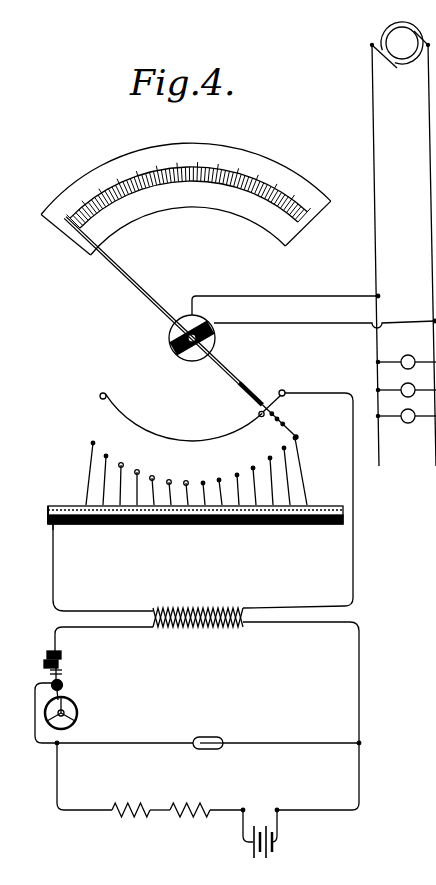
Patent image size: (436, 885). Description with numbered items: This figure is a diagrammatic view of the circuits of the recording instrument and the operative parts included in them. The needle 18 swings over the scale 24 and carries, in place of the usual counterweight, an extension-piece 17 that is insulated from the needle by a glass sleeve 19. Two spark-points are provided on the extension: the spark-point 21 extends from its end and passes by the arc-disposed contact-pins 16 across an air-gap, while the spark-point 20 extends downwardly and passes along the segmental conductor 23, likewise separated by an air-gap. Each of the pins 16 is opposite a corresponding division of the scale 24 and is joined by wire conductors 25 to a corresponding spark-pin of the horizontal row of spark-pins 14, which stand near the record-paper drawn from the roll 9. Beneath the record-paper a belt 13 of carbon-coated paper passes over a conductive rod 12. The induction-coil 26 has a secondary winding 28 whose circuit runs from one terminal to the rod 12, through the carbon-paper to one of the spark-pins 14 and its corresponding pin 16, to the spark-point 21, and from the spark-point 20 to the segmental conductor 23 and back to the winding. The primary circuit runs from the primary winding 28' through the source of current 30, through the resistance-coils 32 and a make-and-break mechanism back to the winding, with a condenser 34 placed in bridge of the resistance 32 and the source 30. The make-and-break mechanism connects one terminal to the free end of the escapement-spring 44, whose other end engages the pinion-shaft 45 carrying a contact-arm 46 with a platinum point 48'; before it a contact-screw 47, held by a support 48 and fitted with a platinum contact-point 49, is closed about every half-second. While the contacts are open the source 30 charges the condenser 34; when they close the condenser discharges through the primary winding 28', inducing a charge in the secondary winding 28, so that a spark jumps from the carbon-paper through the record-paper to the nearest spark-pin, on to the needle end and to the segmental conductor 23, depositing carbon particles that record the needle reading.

The roll of record-paper 9 is at (62, 507).
The rod 12 is at (190, 526).
The belt 13 is at (48, 506).
The spark-pins 14 is at (100, 492).
The contact-pins 16 is at (236, 474).
The extension-piece 17 is at (274, 421).
The needle 18 is at (226, 370).
The glass sleeve 19 is at (252, 394).
The spark-point 20 is at (259, 415).
The spark-point 21 is at (291, 436).
The segmental conductor 23 is at (176, 438).
The scale 24 is at (201, 203).
The wire conductors 25 is at (137, 470).
The induction-coil 26 is at (198, 606).
The secondary winding 28 is at (240, 590).
The primary winding 28' is at (209, 634).
The source of current 30 is at (271, 835).
The resistance-coils 32 is at (180, 820).
The condenser 34 is at (216, 736).
The escapement-spring 44 is at (66, 693).
The pinion-shaft 45 is at (63, 683).
The contact-arm 46 is at (50, 677).
The contact-screw 47 is at (47, 655).
The support 48 is at (29, 666).
The platinum point 48' is at (81, 651).
The platinum contact-point 49 is at (57, 650).